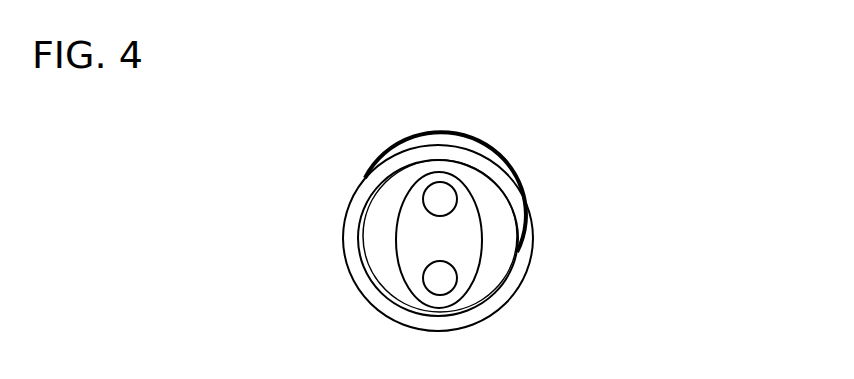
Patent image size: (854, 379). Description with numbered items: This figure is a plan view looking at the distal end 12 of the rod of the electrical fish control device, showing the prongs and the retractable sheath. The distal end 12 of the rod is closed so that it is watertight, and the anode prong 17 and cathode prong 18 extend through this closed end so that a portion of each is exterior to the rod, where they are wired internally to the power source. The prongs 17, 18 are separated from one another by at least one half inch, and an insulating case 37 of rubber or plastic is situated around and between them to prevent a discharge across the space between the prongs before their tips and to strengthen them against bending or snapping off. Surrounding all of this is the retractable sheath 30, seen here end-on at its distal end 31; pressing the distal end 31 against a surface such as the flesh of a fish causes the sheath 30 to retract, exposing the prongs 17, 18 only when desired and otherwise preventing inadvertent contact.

The retractable sheath 30 is at (358, 195).
The distal end of the sheath 31 is at (438, 323).
The distal end of the rod 12 is at (377, 235).
The insulating case 37 is at (458, 245).
The anode prong 17 is at (447, 197).
The cathode prong 18 is at (433, 283).